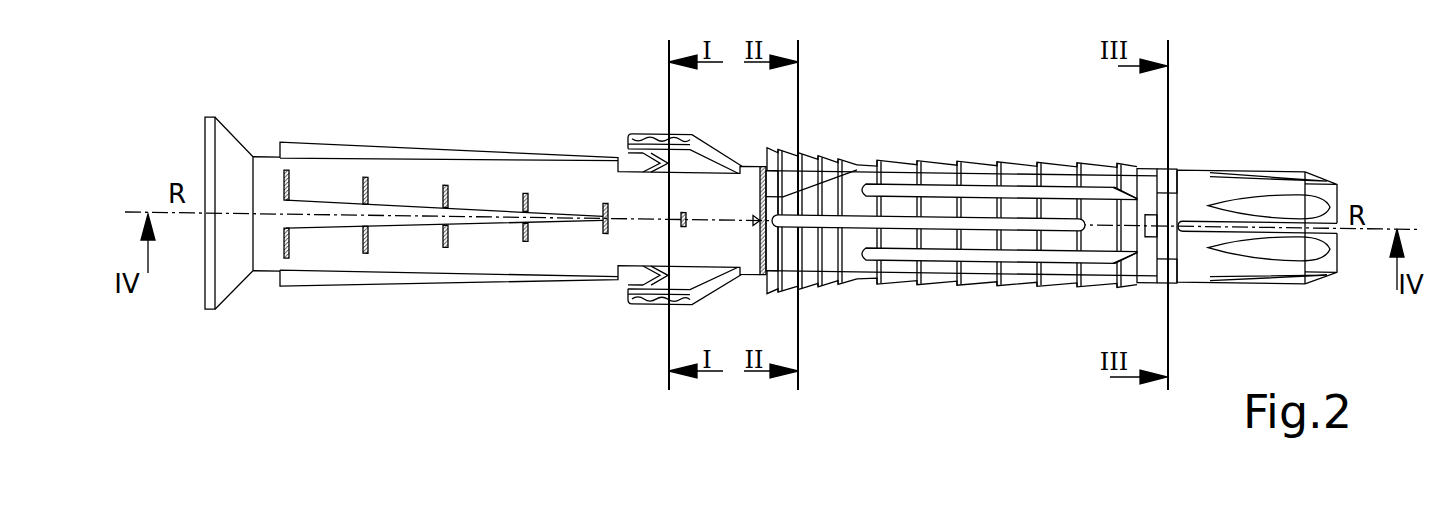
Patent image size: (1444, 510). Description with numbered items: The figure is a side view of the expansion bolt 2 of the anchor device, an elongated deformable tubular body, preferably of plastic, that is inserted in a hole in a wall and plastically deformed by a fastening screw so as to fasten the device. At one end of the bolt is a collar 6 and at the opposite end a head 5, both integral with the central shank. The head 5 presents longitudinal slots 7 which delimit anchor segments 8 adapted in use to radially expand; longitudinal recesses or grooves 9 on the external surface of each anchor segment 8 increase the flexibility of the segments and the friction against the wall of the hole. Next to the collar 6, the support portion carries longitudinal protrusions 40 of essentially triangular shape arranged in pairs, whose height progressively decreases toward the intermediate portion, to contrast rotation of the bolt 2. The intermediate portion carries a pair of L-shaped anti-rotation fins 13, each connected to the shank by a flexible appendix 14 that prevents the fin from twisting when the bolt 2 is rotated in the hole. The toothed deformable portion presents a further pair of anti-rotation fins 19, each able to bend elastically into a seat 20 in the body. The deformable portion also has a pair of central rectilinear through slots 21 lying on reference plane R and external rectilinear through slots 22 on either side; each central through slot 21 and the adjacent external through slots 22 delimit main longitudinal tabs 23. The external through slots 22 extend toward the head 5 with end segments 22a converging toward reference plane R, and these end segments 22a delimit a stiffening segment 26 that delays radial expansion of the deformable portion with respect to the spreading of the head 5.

The expansion bolt 2 is at (520, 198).
The head 5 is at (1286, 213).
The collar 6 is at (210, 113).
The longitudinal slots 7 is at (1322, 227).
The anchor segments 8 is at (1342, 189).
The longitudinal recesses or grooves 9 is at (1274, 198).
The anti-rotation fins 13 is at (645, 133).
The flexible appendix 14 is at (640, 165).
The anti-rotation fins 19 is at (823, 148).
The seat 20 is at (775, 190).
The central rectilinear through slots 21 is at (829, 232).
The external rectilinear through slots 22 is at (964, 188).
The end segments 22a is at (1107, 182).
The main longitudinal tabs 23 is at (999, 191).
The stiffening segments 26 is at (1152, 224).
The longitudinal protrusions 40 is at (314, 146).